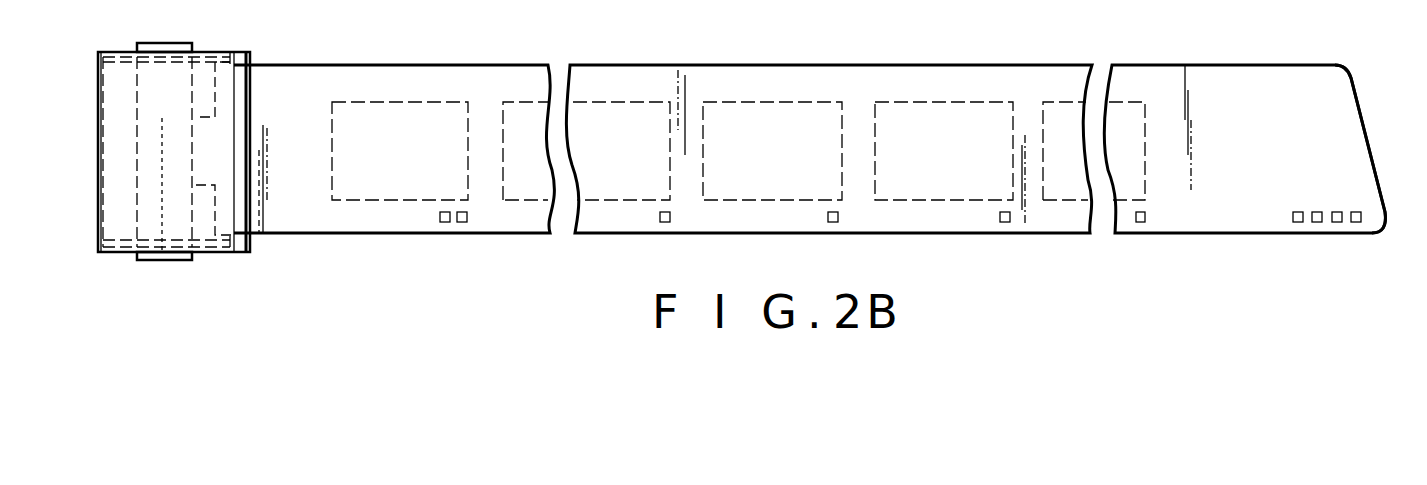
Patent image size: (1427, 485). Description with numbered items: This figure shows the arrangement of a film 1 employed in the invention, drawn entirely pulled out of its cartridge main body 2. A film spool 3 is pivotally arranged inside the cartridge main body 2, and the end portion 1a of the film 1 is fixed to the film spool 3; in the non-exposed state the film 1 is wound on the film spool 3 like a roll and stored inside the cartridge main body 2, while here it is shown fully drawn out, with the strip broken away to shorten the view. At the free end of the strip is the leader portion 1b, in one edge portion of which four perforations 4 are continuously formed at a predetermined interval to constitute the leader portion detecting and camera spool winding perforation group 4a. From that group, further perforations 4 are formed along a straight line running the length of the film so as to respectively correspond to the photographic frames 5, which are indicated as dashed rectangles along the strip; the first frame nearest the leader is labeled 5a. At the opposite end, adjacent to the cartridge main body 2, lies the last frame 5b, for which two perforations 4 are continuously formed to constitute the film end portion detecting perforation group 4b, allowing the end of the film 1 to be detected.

The film 1 is at (722, 64).
The end portion 1a is at (196, 137).
The leader portion 1b is at (1350, 165).
The cartridge main body 2 is at (98, 160).
The film spool 3 is at (175, 48).
The perforation 4 is at (468, 218).
The leader portion detecting/camera spool winding perforation group 4a is at (1365, 245).
The film end portion detecting perforation group 4b is at (474, 243).
The photographic frame 5 is at (955, 125).
The first exposure frame 5a is at (1112, 122).
The last frame 5b is at (347, 165).